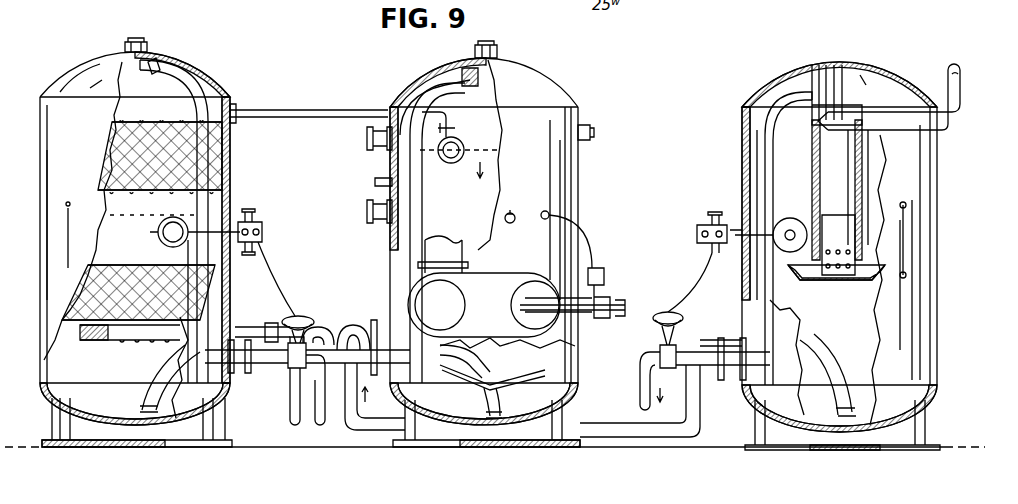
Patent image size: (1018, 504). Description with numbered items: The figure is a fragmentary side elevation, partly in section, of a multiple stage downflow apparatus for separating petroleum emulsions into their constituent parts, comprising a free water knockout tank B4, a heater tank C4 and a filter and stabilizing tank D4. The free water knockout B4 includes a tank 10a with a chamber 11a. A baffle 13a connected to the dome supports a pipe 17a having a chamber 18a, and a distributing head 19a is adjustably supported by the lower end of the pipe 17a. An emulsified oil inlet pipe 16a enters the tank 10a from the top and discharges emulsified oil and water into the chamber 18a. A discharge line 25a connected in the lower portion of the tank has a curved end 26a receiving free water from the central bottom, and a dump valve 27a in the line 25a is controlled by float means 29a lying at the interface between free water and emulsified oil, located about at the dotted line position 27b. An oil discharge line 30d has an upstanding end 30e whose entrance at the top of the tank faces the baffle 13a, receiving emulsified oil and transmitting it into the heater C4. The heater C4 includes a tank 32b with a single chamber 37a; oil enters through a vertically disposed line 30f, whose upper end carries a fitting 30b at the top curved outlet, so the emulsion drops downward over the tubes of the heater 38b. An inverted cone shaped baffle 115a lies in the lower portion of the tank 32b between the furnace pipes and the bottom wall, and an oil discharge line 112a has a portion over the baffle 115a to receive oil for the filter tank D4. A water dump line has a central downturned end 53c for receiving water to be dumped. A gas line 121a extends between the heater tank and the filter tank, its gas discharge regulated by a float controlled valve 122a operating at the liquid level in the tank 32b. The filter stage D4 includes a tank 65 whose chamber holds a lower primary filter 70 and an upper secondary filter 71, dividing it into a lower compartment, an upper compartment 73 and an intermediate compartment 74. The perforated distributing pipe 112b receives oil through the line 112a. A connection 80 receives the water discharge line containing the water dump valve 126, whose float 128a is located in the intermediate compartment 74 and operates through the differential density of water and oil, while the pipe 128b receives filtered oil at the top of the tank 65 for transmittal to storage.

The filter and stabilizing tank D4 is at (60, 132).
The tank 65 is at (58, 185).
The upper compartment 73 is at (155, 72).
The upper secondary filter 71 is at (115, 130).
The intermediate compartment 74 is at (155, 210).
The float 128a is at (163, 236).
The lower primary filter 70 is at (82, 268).
The perforated distributing pipe 112b is at (122, 336).
The connection 80 is at (240, 368).
The pipe 128b is at (248, 208).
The water dump valve 126 is at (302, 330).
The oil discharge line 112a is at (330, 340).
The gas line 121a is at (325, 118).
The heater tank C4 is at (565, 174).
The chamber 37a is at (430, 76).
The vertically disposed line 30f is at (421, 186).
The pipe coupling 30b is at (474, 90).
The float controlled valve 122a is at (468, 137).
The heater 38b is at (496, 285).
The inverted cone shaped baffle 115a is at (530, 378).
The downturned end 53c is at (494, 404).
The tank 32b is at (572, 216).
The free water knockout tank B4 is at (940, 170).
The upstanding end 30e is at (765, 140).
The pipe 17a is at (812, 150).
The chamber 18a is at (862, 160).
The distributing head 19a is at (832, 282).
The float means 29a is at (792, 222).
The emulsified oil inlet pipe 16a is at (885, 118).
The chamber 11a is at (935, 140).
The baffle 13a is at (862, 80).
The dotted line position 27b is at (880, 245).
The tank 10a is at (912, 314).
The curved end 26a is at (822, 372).
The dump valve 27a is at (664, 308).
The discharge line 25a is at (724, 372).
The oil discharge line 30d is at (620, 424).